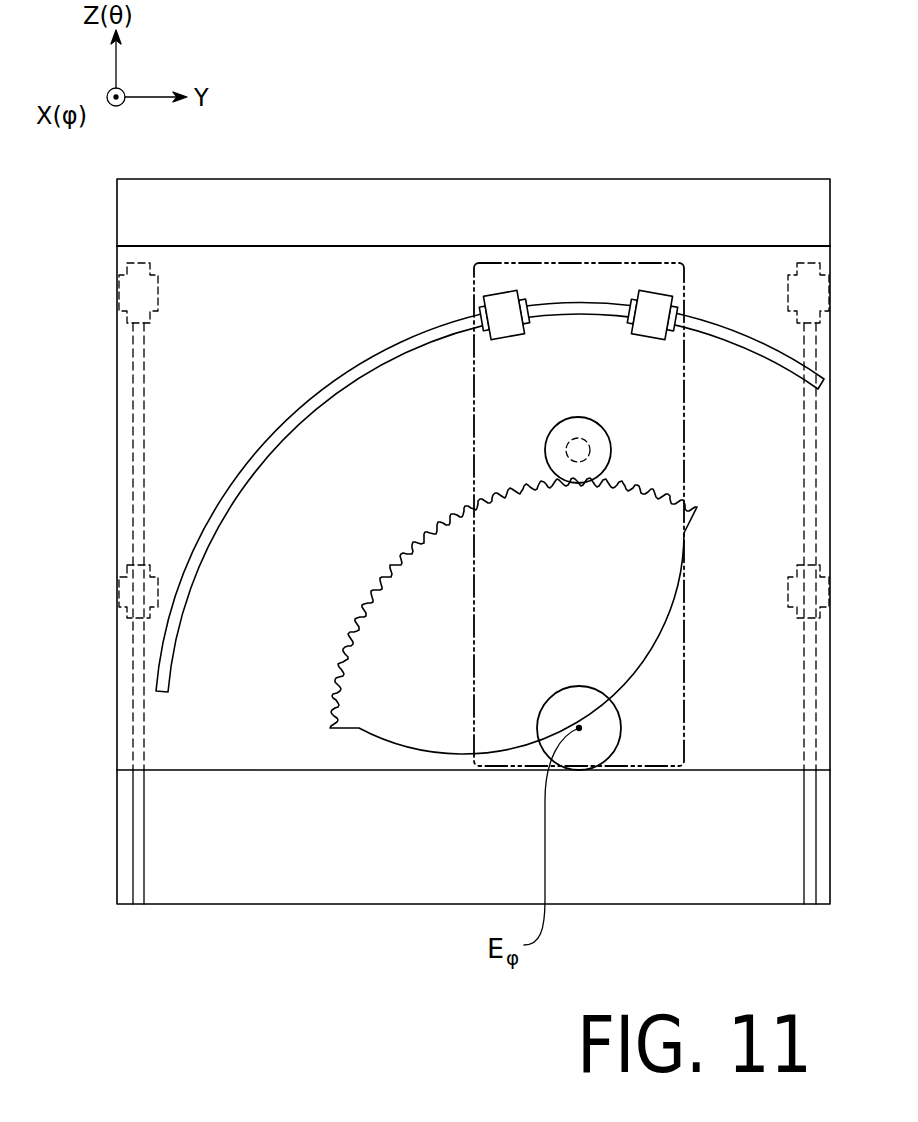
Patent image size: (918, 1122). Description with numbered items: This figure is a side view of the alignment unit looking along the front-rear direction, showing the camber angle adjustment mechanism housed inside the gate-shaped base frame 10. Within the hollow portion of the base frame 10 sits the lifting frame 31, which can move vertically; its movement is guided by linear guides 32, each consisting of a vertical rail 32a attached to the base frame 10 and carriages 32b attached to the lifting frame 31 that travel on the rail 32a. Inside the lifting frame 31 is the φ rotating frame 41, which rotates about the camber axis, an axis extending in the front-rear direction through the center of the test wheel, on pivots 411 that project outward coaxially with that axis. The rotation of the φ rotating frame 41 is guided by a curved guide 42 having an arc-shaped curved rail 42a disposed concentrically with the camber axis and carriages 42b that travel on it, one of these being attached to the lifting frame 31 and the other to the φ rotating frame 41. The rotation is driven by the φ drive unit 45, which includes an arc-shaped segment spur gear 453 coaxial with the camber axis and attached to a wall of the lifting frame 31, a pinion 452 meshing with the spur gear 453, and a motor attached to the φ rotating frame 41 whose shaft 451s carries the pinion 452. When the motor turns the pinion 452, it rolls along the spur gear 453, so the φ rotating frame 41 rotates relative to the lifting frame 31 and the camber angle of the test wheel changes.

The base frame 10 is at (665, 179).
The lifting frame 31 is at (782, 246).
The linear guide 32 is at (223, 583).
The rail 32a is at (137, 398).
The carriage 32b is at (158, 297).
The φ rotating frame 41 is at (474, 736).
The pivot 411 is at (619, 736).
The curved guide 42 is at (490, 376).
The curved rail 42a is at (416, 342).
The carriage 42b is at (502, 306).
The φ drive unit 45 is at (513, 581).
The shaft 451s is at (573, 448).
The pinion 452 is at (556, 426).
The spur gear 453 is at (490, 494).